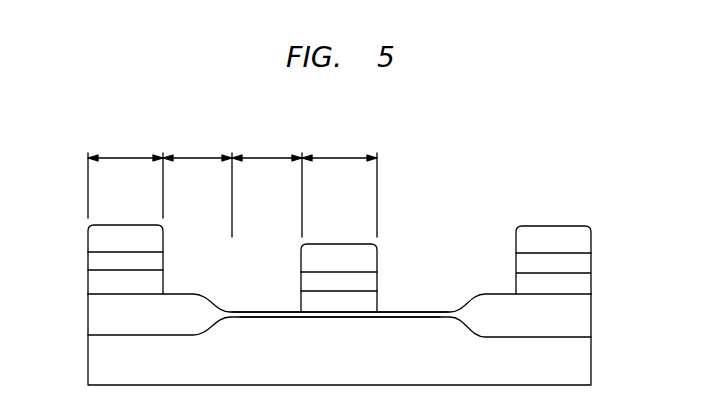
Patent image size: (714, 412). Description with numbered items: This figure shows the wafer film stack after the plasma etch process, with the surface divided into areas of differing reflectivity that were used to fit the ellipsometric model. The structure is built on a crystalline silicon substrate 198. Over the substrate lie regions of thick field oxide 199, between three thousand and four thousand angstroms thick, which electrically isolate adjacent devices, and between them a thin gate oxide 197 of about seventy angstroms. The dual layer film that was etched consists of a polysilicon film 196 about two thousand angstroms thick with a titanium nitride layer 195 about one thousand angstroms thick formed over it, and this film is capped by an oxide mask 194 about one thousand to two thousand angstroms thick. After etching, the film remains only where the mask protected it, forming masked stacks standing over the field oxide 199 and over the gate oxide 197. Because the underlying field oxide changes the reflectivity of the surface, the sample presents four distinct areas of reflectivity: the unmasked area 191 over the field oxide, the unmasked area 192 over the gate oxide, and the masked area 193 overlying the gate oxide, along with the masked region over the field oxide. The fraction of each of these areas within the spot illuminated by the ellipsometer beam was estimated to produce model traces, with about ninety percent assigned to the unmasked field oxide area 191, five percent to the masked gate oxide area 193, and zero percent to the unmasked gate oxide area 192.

The unmasked area of field oxide 191 is at (189, 158).
The unmasked area of gate oxide 192 is at (126, 158).
The masked area overlying the gate oxide 193 is at (336, 158).
The oxide mask 194 is at (592, 236).
The titanium nitride layer 195 is at (88, 261).
The polysilicon film 196 is at (592, 285).
The gate oxide 197 is at (345, 318).
The crystalline silicon substrate 198 is at (592, 362).
The field oxide 199 is at (88, 314).